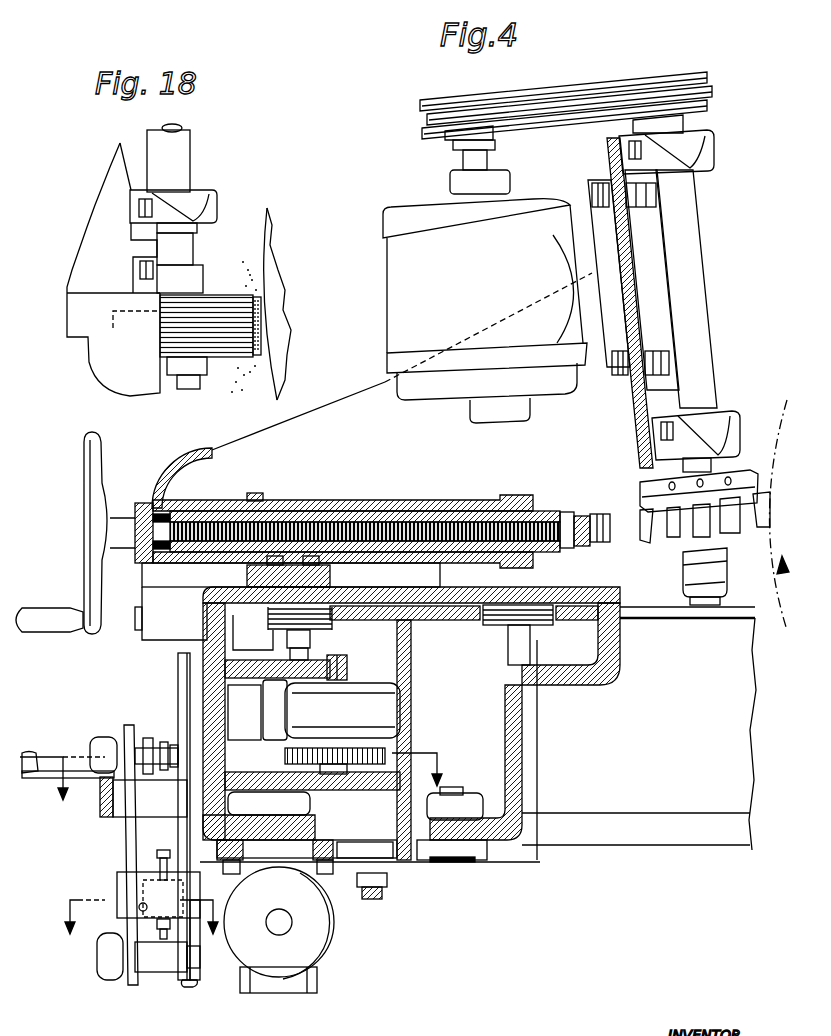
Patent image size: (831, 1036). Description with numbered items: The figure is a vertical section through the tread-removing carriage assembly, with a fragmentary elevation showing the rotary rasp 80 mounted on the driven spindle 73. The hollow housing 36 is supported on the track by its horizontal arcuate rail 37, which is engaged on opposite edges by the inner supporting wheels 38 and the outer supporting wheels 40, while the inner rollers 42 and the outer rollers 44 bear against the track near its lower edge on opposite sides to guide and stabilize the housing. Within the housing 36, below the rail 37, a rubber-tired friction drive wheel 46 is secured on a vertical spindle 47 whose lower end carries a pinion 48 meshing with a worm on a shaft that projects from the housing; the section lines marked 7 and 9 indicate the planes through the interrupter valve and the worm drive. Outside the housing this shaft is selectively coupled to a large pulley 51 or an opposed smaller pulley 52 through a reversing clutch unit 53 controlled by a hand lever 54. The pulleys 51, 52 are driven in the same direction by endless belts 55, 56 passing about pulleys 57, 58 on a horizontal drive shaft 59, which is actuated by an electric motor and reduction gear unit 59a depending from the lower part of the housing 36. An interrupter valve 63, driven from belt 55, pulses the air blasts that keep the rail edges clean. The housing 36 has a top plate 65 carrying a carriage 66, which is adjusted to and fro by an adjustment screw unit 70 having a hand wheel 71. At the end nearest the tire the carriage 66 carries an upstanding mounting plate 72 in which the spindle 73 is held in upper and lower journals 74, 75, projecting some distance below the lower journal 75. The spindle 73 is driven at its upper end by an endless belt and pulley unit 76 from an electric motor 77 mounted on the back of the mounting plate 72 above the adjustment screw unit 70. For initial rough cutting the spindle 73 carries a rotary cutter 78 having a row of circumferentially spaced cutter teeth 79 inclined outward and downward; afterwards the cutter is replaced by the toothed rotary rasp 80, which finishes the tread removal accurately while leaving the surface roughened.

In FIG. 4, the section line 7- 7 is at (137, 907).
In FIG. 4, the section line 9- 9 is at (231, 768).
In FIG. 4, the housing 36 is at (210, 693).
In FIG. 4, the horizontal arcuate rail 37 is at (446, 623).
In FIG. 4, the inner supporting wheels 38 is at (527, 612).
In FIG. 4, the outer supporting wheels 40 is at (284, 612).
In FIG. 4, the inner rollers 42 is at (455, 852).
In FIG. 4, the outer rollers 44 is at (367, 852).
In FIG. 4, the rubber-tired friction drive wheel 46 is at (385, 705).
In FIG. 4, the vertical spindle 47 is at (345, 666).
In FIG. 4, the pinion 48 is at (371, 764).
In FIG. 4, the large pulley 51 is at (178, 665).
In FIG. 4, the smaller pulley 52 is at (124, 730).
In FIG. 4, the reversing clutch unit 53 is at (148, 738).
In FIG. 4, the hand lever 54 is at (47, 783).
In FIG. 4, the endless belt 55 is at (186, 830).
In FIG. 4, the endless belt 56 is at (125, 843).
In FIG. 4, the pulley 57 is at (197, 981).
In FIG. 4, the pulley 58 is at (127, 985).
In FIG. 4, the horizontal drive shaft 59 is at (163, 962).
In FIG. 4, the electric motor and reduction gear unit 59a is at (290, 930).
In FIG. 4, the interrupter valve 63 is at (152, 897).
In FIG. 4, the top plate 65 is at (560, 592).
In FIG. 18, the carriage 66 is at (100, 223).
In FIG. 4, the carriage 66 is at (305, 428).
In FIG. 4, the adjustment screw unit 70 is at (366, 497).
In FIG. 4, the hand wheel 71 is at (86, 480).
In FIG. 4, the mounting plate 72 is at (631, 306).
In FIG. 18, the spindle 73 is at (177, 147).
In FIG. 4, the spindle 73 is at (681, 238).
In FIG. 4, the upper journal 74 is at (708, 139).
In FIG. 18, the lower journal 75 is at (203, 197).
In FIG. 4, the lower journal 75 is at (714, 412).
In FIG. 4, the endless belt and pulley unit 76 is at (556, 86).
In FIG. 4, the electric motor 77 is at (413, 270).
In FIG. 4, the rotary cutter 78 is at (640, 483).
In FIG. 4, the cutter teeth 79 is at (703, 528).
In FIG. 18, the rotary rasp 80 is at (217, 293).